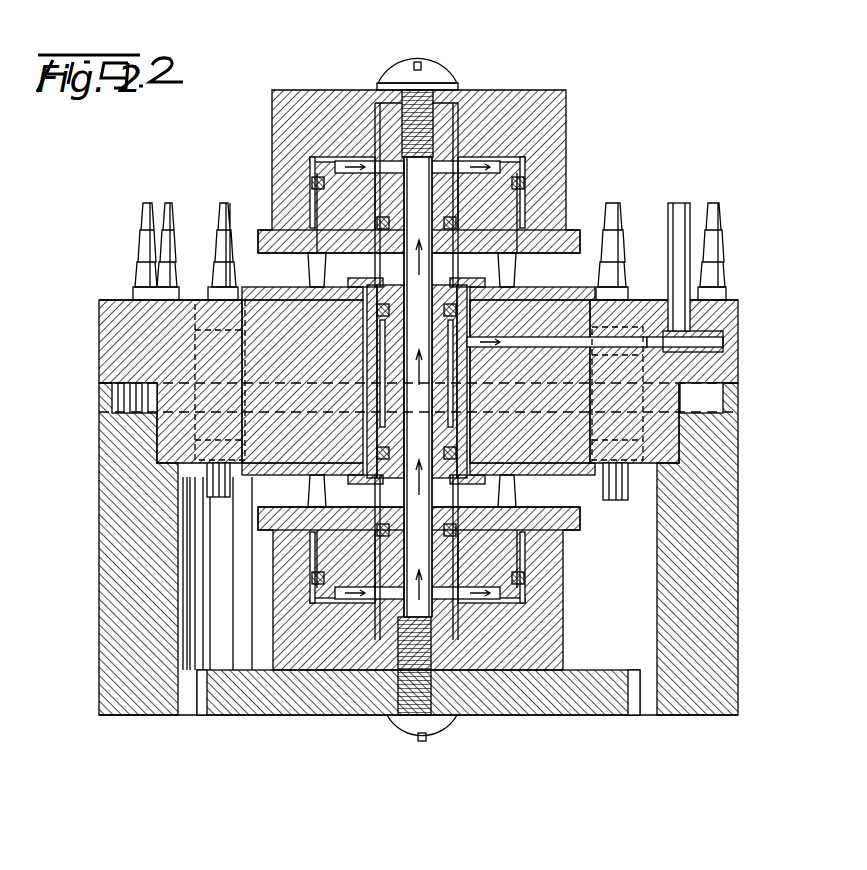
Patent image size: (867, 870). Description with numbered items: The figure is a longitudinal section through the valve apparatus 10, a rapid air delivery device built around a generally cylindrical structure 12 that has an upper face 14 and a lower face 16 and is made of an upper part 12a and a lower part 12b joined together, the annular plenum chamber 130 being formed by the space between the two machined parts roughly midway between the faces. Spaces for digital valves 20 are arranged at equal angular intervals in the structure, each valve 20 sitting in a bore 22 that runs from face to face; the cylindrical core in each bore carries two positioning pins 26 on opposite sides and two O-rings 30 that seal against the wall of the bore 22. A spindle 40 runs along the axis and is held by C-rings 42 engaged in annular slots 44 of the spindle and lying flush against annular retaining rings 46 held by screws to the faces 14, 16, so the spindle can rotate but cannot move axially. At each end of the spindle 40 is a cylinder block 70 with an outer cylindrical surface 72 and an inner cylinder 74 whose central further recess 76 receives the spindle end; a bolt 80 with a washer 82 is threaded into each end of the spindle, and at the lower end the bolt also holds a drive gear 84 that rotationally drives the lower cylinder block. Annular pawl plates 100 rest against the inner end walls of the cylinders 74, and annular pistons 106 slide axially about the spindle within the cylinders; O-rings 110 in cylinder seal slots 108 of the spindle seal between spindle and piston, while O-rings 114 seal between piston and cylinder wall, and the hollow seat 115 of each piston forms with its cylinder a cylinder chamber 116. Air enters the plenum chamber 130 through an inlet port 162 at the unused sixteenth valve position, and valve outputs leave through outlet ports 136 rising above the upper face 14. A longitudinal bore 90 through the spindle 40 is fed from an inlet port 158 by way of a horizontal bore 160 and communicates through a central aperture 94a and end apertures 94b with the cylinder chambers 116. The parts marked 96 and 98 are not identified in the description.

The valve apparatus 10 is at (648, 118).
The cylindrical structure 12 is at (99, 318).
The upper part 12a is at (740, 310).
The lower part 12b is at (99, 455).
The upper face 14 is at (110, 298).
The lower face 16 is at (115, 716).
The digital valves 20 is at (105, 381).
The bore 22 is at (724, 348).
The positioning pins 26 is at (215, 266).
The O-rings 30 is at (205, 490).
The spindle 40 is at (458, 172).
The C-rings 42 is at (472, 252).
The annular slots 44 is at (482, 432).
The retaining rings 46 is at (290, 296).
The cylinder blocks 70 is at (545, 96).
The outer cylindrical surface 72 is at (553, 150).
The inner cylinder 74 is at (315, 166).
The further recess 76 is at (440, 92).
The bolt 80 is at (426, 64).
The washer 82 is at (405, 96).
The drive gear 84 is at (245, 712).
The longitudinal bore 90 is at (436, 162).
The central aperture 94a is at (372, 397).
The upper and lower apertures 94b is at (378, 158).
The O-ring 96 is at (378, 312).
The shaft 98 is at (395, 340).
The pawl plates 100 is at (272, 240).
The pistons 106 is at (540, 556).
The cylinder seal slots 108 is at (318, 176).
The O-rings 110 is at (525, 183).
The O-rings 114 is at (385, 580).
The hollow seat 115 is at (530, 168).
The cylinder chamber 116 is at (478, 162).
The plenum chamber 130 is at (112, 398).
The outlet ports 136 is at (145, 210).
The inlet port 158 is at (690, 206).
The horizontal bore 160 is at (532, 336).
The inlet port 162 is at (722, 226).